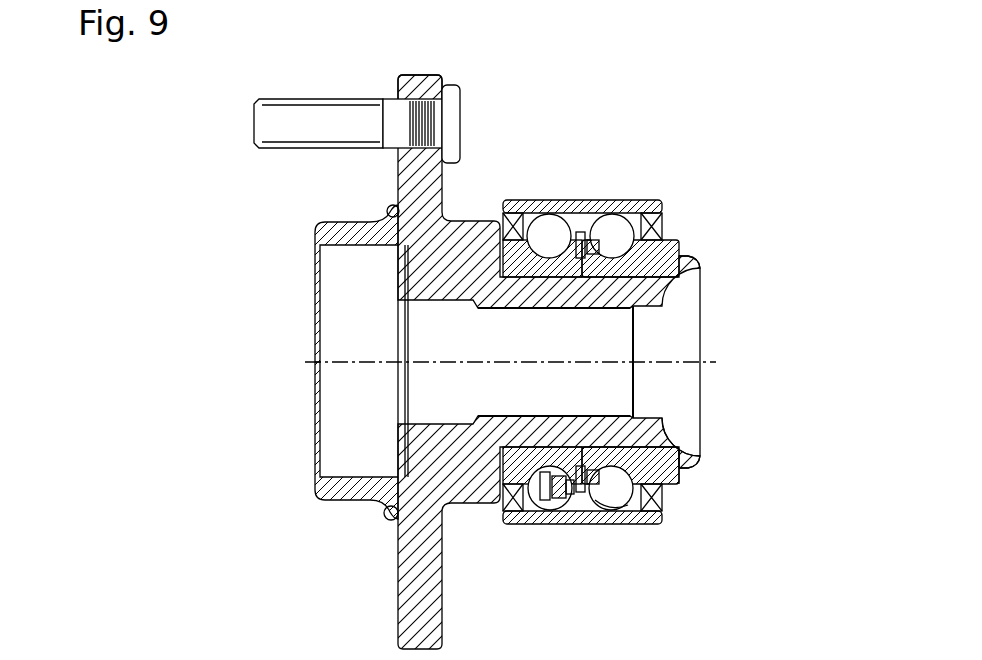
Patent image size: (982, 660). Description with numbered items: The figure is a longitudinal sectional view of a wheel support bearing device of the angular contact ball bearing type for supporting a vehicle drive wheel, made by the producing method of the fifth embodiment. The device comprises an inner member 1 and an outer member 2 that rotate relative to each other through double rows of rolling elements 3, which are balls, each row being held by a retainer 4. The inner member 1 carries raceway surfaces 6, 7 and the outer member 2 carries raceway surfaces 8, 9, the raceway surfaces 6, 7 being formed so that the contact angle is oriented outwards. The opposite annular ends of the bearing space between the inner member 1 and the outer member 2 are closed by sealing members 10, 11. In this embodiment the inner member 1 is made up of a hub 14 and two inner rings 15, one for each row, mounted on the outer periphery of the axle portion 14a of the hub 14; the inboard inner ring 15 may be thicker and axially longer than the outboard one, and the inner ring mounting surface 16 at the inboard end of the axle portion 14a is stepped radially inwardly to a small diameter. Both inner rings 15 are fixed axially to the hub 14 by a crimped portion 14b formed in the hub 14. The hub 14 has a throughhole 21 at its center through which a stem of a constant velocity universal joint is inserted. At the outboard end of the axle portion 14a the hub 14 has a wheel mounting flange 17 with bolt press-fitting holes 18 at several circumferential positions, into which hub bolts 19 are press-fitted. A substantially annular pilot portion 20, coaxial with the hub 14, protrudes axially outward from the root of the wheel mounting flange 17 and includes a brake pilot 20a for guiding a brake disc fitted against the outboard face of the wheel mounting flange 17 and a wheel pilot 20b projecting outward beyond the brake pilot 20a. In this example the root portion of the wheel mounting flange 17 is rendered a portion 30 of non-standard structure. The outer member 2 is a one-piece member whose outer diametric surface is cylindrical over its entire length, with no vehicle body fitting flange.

The inner member 1 is at (207, 325).
The outer member 2 is at (609, 193).
The rolling elements 3 is at (552, 228).
The retainer 4 is at (567, 505).
The raceway surface 6 is at (545, 508).
The raceway surface 7 is at (622, 506).
The raceway surface 8 is at (560, 500).
The raceway surface 9 is at (590, 503).
The sealing member 10 is at (505, 500).
The sealing member 11 is at (658, 497).
The hub 14 is at (470, 298).
The axle portion 14a is at (567, 421).
The crimped portion 14b is at (700, 272).
The inner ring 15 is at (615, 268).
The inner ring mounting surface 16 is at (680, 476).
The wheel mounting flange 17 is at (423, 83).
The bolt press-fitting hole 18 is at (425, 111).
The hub bolt 19 is at (308, 137).
The pilot portion 20 is at (286, 352).
The brake pilot 20a is at (388, 208).
The wheel pilot 20b is at (345, 220).
The throughhole 21 is at (640, 400).
The portion of the non-standard structure 30 is at (396, 205).